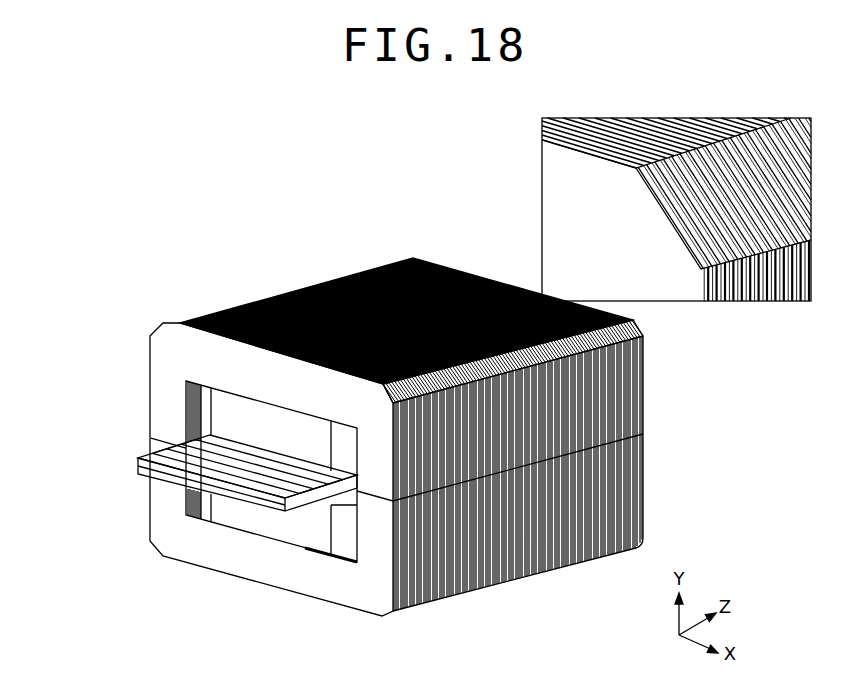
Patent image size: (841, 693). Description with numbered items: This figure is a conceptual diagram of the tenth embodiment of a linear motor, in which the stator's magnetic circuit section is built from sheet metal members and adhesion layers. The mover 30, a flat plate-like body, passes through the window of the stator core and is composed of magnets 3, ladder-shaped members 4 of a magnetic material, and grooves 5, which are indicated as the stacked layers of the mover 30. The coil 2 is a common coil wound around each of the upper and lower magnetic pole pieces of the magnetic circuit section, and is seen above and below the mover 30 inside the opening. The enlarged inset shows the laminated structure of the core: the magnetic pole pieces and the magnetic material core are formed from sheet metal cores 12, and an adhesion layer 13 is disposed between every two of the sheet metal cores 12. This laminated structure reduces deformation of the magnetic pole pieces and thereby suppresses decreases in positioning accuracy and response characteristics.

The coil 2 is at (235, 422).
The magnets 3 is at (178, 446).
The ladder-shaped members 4 is at (130, 460).
The grooves 5 is at (162, 452).
The mover 30 is at (80, 408).
The sheet metal cores 12 is at (667, 283).
The adhesion layer 13 is at (703, 283).